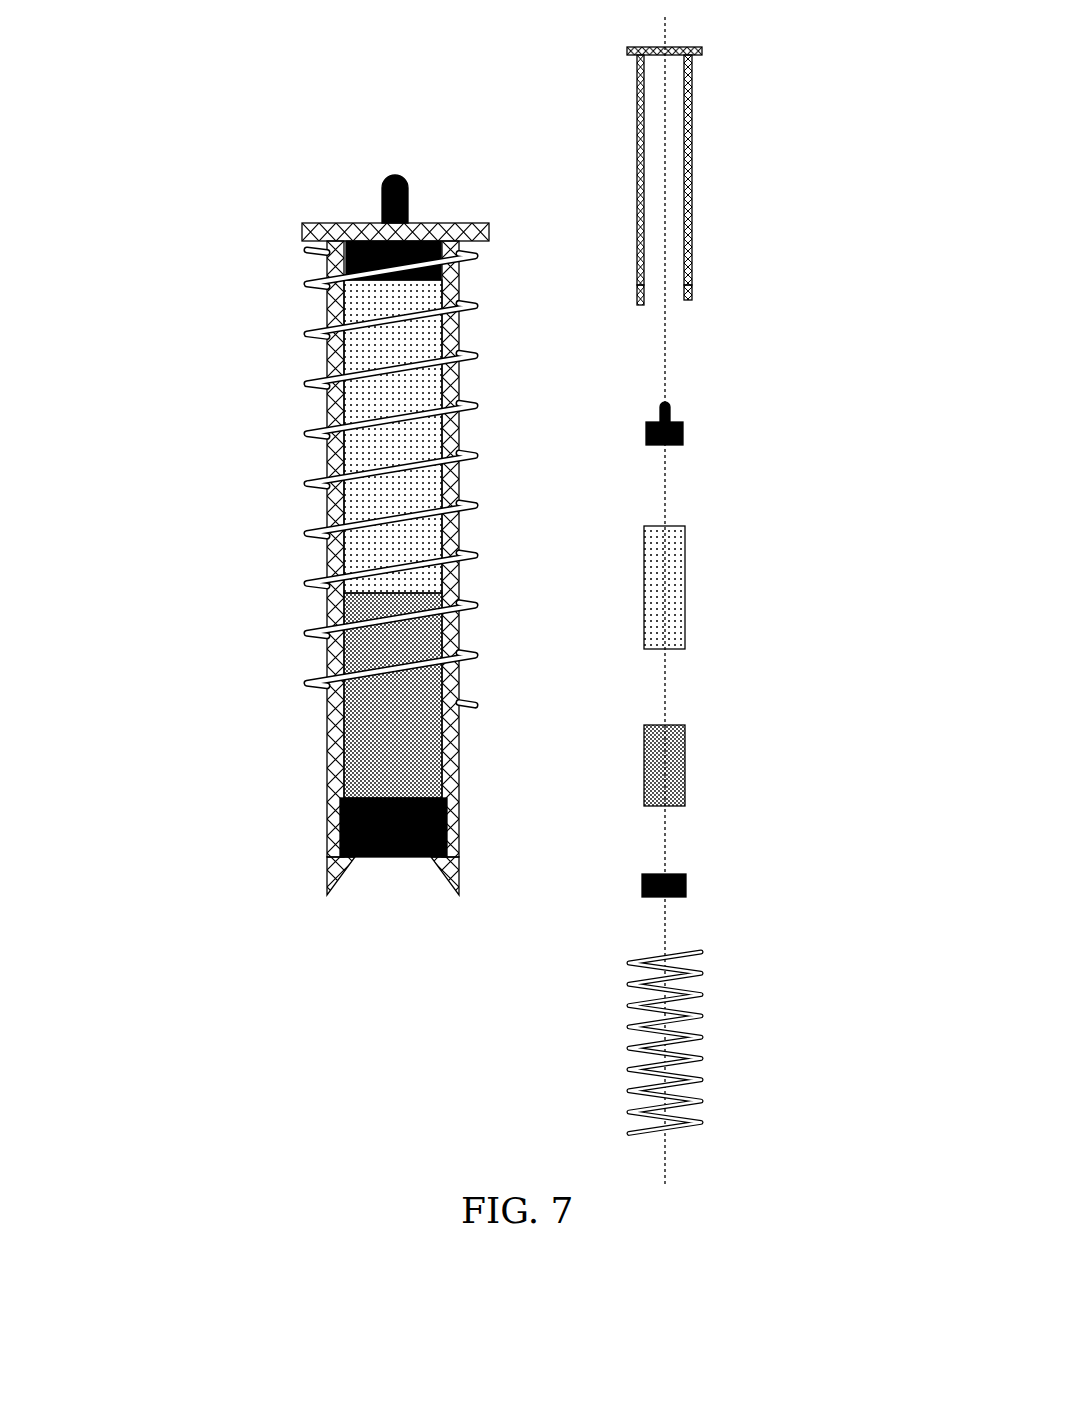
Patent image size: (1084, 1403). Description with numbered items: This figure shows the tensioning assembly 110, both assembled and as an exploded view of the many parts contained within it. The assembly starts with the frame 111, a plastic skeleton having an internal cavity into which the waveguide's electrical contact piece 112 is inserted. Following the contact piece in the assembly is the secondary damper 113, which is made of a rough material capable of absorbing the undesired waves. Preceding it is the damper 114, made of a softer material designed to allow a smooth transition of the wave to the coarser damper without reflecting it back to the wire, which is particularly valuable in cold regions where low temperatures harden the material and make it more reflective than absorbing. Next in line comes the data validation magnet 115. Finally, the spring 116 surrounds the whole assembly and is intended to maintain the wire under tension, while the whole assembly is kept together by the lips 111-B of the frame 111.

The tensioning assembly 110 is at (266, 426).
The frame 111 is at (735, 170).
The lips 111-B is at (690, 310).
The electrical contact piece 112 is at (683, 426).
The secondary damper 113 is at (685, 590).
The damper 114 is at (685, 757).
The data validation magnet 115 is at (685, 873).
The spring 116 is at (690, 990).